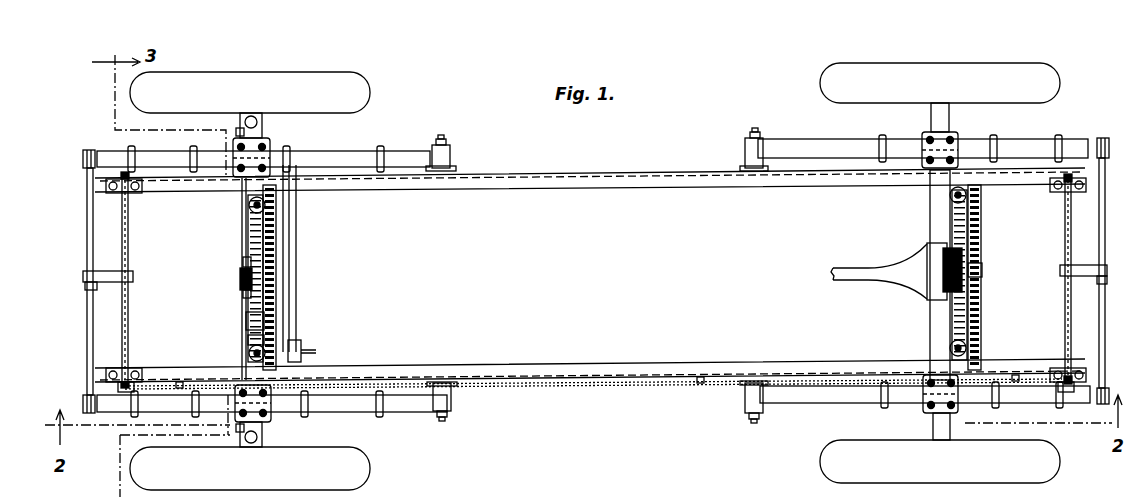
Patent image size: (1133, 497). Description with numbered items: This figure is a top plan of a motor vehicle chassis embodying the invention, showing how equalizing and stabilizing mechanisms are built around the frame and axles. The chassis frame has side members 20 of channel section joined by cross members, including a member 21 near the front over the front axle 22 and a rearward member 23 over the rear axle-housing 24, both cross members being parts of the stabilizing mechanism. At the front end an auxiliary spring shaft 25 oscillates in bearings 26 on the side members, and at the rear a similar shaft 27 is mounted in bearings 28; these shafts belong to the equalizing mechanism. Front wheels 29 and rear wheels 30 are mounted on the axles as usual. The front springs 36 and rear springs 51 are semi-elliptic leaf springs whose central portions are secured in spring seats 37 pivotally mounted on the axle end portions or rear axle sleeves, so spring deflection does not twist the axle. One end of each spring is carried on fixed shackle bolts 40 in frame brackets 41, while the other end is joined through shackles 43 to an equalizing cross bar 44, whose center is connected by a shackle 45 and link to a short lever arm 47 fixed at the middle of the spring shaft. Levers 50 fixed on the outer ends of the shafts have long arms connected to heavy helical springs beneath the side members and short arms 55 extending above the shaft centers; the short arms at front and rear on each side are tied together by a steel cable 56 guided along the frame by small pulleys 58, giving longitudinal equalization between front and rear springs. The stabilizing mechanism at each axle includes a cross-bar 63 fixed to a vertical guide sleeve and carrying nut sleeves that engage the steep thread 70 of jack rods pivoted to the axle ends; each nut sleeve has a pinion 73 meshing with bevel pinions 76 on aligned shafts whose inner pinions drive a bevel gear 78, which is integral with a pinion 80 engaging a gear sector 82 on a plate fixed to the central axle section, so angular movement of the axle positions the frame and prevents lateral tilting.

The side members 20 is at (625, 191).
The cross frame member 21 is at (270, 243).
The front axle 22 is at (248, 225).
The rearward cross frame member 23 is at (981, 225).
The rear axle-housing 24 is at (930, 230).
The auxiliary spring shaft 25 is at (128, 247).
The bearings 26 is at (128, 190).
The rear spring shaft 27 is at (1065, 250).
The bearings 28 is at (1070, 178).
The front wheels 29 is at (326, 72).
The rear wheels 30 is at (915, 62).
The front springs 36 is at (360, 152).
The spring seats 37 is at (262, 150).
The shackle bolts 40 is at (442, 135).
The frame brackets 41 is at (450, 162).
The shackles 43 is at (83, 152).
The equalizing cross bar 44 is at (87, 333).
The shackle 45 is at (88, 284).
The short lever arm 47 is at (120, 241).
The levers 50 is at (120, 392).
The rear springs 51 is at (838, 146).
The short arms 55 is at (1084, 493).
The steel cable 56 is at (548, 390).
The pulleys 58 is at (180, 388).
The cross-bar 63 is at (246, 321).
The thread 70 is at (262, 203).
The pinion 73 is at (249, 205).
The bevel pinions 76 is at (248, 340).
The bevel gear 78 is at (243, 294).
The pinion 80 is at (240, 279).
The gear sector 82 is at (243, 262).